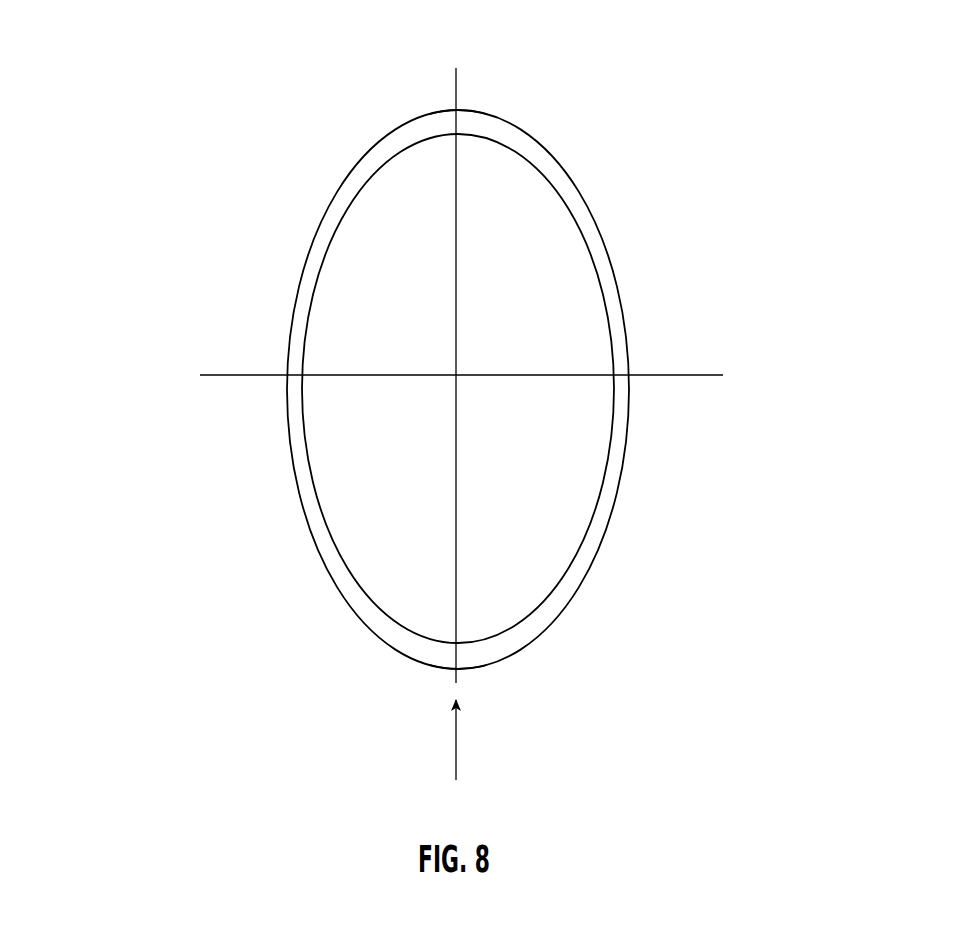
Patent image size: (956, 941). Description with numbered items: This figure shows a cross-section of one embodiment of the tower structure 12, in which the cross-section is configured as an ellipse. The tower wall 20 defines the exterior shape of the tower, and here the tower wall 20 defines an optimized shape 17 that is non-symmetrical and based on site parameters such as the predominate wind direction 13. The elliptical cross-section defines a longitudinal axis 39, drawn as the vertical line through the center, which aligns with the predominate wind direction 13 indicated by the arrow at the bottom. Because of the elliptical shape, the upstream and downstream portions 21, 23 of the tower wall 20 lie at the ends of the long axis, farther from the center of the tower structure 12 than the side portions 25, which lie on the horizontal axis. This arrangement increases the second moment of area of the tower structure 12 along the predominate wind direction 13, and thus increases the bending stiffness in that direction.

The tower structure 12 is at (196, 171).
The predominate wind direction 13 is at (456, 755).
The optimized shape 17 is at (667, 188).
The tower wall 20 is at (592, 570).
The upstream portion 21 is at (416, 678).
The downstream portion 23 is at (466, 101).
The side portions 25 is at (200, 412).
The longitudinal axis 39 is at (456, 315).